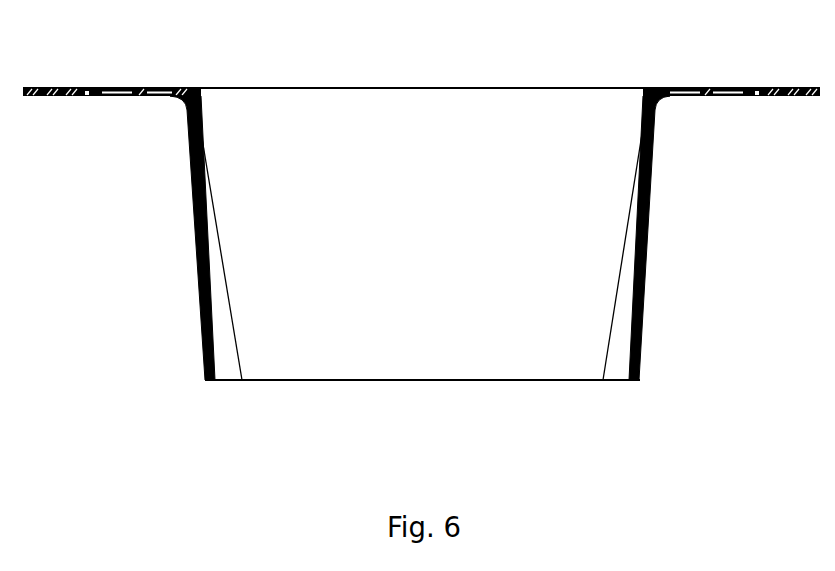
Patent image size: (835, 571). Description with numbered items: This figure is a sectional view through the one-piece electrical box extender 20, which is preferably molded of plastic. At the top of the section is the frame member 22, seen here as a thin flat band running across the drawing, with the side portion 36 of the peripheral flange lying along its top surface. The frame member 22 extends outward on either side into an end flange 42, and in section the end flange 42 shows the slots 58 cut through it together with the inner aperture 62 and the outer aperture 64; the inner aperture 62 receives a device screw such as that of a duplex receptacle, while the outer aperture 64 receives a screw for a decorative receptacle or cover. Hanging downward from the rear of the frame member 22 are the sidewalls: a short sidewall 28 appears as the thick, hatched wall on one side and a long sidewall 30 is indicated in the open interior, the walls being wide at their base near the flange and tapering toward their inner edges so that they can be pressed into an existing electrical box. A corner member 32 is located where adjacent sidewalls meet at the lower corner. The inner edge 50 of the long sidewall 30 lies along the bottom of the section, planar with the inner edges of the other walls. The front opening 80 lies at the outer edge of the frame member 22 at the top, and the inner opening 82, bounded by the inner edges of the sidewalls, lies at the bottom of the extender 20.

The box extender 20 is at (155, 312).
The frame member 22 is at (652, 88).
The short sidewall 28 is at (648, 229).
The long sidewall 30 is at (430, 231).
The corner member 32 is at (616, 371).
The side portion 36 is at (306, 88).
The end flange 42 is at (50, 88).
The inner edge of long sidewall 50 is at (520, 380).
The slot 58 is at (87, 96).
The inner aperture 62 is at (156, 88).
The outer aperture 64 is at (114, 88).
The front opening 80 is at (407, 98).
The inner opening 82 is at (376, 370).